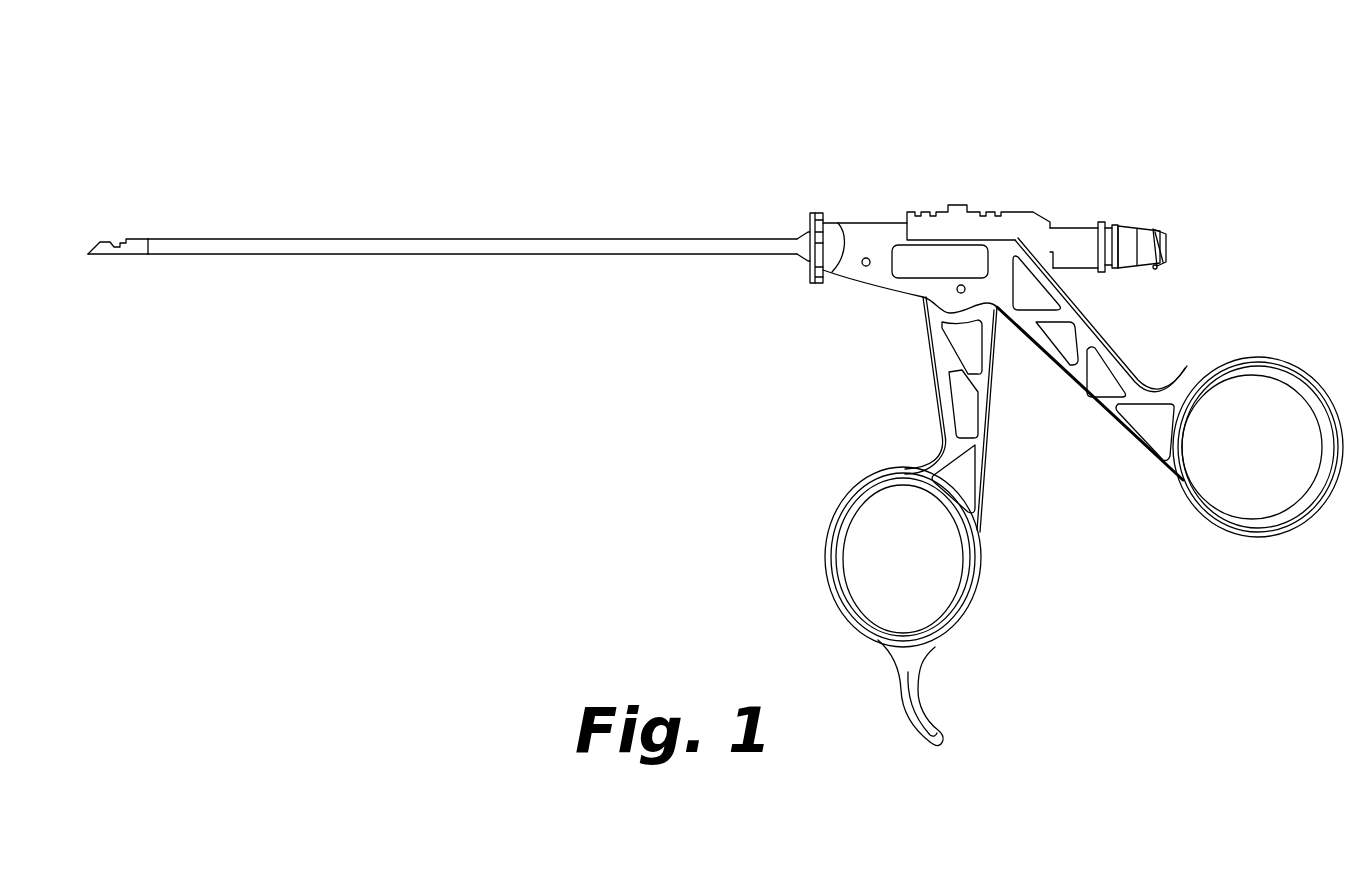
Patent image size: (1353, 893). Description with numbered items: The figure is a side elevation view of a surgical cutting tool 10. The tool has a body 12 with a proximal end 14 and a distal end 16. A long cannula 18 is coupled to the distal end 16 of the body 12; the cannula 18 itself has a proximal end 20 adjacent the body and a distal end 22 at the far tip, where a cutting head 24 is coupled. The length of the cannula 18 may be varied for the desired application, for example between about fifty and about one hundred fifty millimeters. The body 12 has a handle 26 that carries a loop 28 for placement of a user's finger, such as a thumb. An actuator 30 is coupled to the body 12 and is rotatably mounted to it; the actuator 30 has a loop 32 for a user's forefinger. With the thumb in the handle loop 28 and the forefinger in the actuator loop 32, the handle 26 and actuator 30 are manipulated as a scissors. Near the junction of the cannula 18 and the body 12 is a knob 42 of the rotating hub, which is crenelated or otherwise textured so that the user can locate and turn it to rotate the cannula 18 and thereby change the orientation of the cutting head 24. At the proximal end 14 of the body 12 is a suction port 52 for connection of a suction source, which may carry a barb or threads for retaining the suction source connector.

The surgical cutting tool 10 is at (983, 134).
The body 12 is at (882, 223).
The proximal end 14 is at (1062, 226).
The distal end 16 is at (829, 222).
The cannula 18 is at (435, 243).
The proximal end 20 is at (781, 245).
The distal end 22 is at (172, 245).
The cutting head 24 is at (94, 242).
The handle 26 is at (1100, 374).
The loop 28 is at (1294, 380).
The actuator 30 is at (960, 478).
The loop 32 is at (843, 520).
The knob 42 is at (816, 213).
The suction port 52 is at (1124, 240).